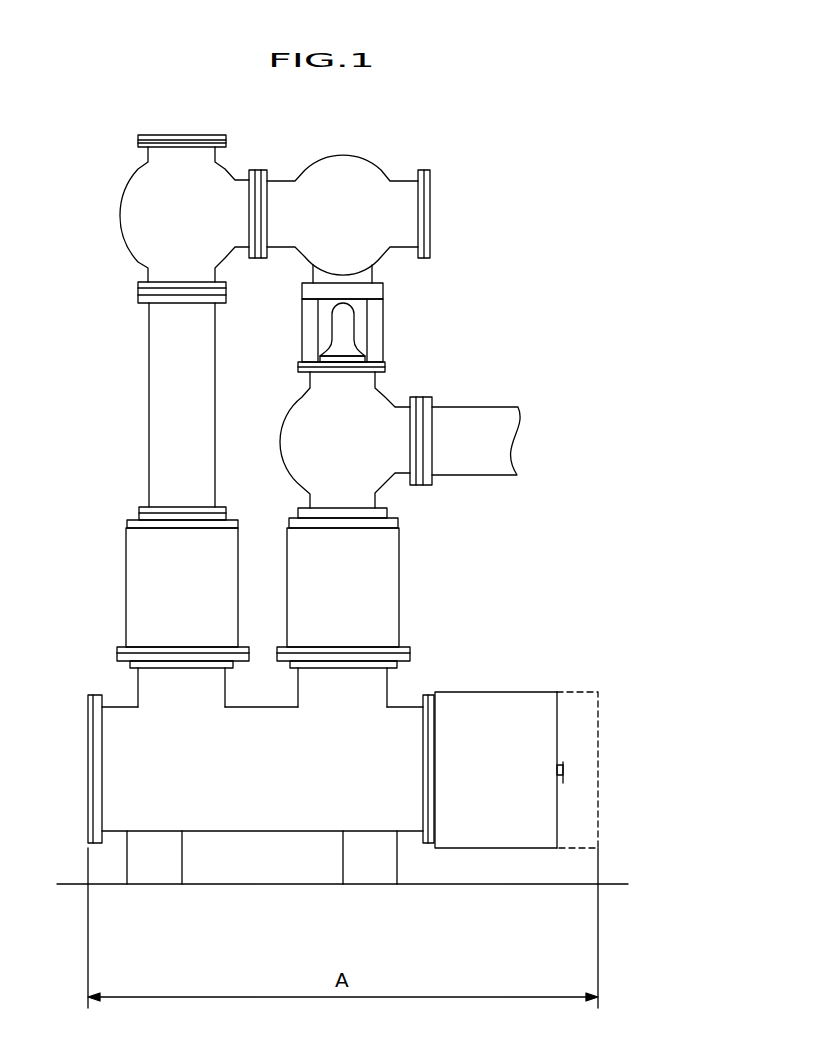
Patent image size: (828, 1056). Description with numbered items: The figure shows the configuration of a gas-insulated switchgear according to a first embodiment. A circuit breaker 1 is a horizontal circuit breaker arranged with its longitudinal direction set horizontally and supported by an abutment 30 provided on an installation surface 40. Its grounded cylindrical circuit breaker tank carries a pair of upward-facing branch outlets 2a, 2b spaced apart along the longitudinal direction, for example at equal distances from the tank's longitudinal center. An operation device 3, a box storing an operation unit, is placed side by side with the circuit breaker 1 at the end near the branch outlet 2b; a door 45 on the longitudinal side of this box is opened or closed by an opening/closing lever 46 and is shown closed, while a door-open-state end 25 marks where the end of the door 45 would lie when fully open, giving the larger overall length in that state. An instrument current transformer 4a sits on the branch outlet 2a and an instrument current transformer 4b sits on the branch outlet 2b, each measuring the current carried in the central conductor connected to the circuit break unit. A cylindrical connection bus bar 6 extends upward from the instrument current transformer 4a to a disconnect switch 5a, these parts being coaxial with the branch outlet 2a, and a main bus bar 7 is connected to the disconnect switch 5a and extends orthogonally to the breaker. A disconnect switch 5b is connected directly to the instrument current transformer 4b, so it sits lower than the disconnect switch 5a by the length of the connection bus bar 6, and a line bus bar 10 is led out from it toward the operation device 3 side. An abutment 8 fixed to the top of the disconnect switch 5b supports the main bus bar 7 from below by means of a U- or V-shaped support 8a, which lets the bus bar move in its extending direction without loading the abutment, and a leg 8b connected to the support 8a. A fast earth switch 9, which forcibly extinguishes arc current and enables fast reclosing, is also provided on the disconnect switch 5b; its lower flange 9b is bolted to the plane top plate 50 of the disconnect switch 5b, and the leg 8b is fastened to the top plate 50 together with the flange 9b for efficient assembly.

The circuit breaker 1 is at (113, 768).
The branch outlet 2a is at (148, 692).
The branch outlet 2b is at (377, 692).
The operation device 3 is at (500, 700).
The instrument current transformer 4a is at (138, 587).
The instrument current transformer 4b is at (387, 587).
The disconnect switch 5a is at (130, 213).
The disconnect switch 5b is at (377, 479).
The connection bus bar 6 is at (160, 405).
The main bus bar 7 is at (343, 166).
The abutment 8 is at (380, 319).
The support 8a is at (370, 272).
The leg 8b is at (310, 330).
The fast earth switch 9 is at (347, 348).
The flange 9b is at (384, 365).
The line bus bar 10 is at (470, 465).
The door-open-state end 25 is at (598, 768).
The abutment 30 is at (170, 858).
The installation surface 40 is at (618, 884).
The door 45 is at (558, 732).
The opening/closing lever 46 is at (565, 780).
The top plate 50 is at (298, 366).